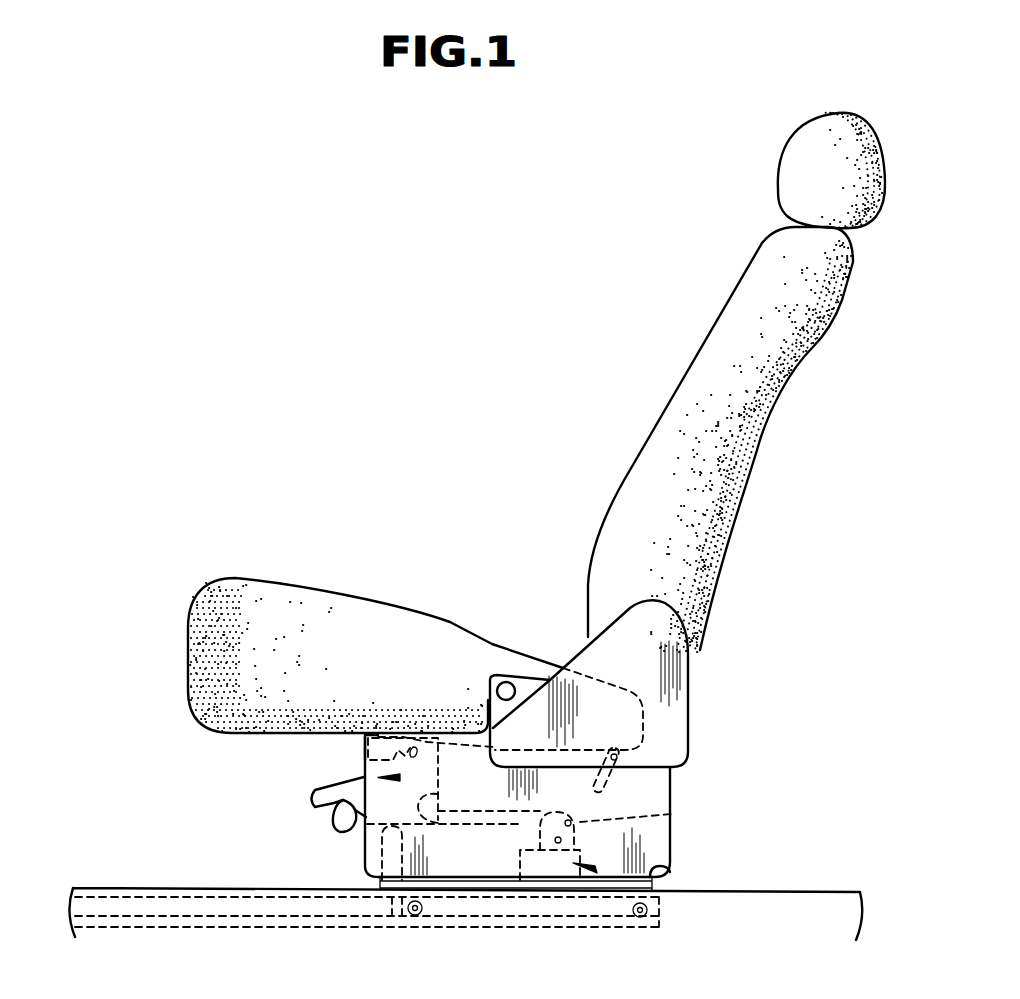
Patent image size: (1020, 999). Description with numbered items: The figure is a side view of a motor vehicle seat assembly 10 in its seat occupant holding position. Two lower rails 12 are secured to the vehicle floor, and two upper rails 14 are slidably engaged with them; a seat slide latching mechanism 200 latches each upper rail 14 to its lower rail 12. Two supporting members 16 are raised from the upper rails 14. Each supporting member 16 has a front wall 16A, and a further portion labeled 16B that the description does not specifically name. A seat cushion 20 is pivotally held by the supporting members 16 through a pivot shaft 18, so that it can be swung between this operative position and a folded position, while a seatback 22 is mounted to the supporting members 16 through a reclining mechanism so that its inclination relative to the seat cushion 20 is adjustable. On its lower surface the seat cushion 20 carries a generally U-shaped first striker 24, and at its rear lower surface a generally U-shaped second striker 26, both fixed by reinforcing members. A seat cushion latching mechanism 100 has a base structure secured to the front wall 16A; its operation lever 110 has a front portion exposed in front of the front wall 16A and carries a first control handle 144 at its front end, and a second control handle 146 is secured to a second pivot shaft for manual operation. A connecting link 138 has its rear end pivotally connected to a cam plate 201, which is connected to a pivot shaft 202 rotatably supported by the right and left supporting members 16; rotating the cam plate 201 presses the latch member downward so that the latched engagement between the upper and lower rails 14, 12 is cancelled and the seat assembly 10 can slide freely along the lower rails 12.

The seat assembly 10 is at (470, 490).
The lower rail 12 is at (122, 907).
The upper rail 14 is at (668, 870).
The supporting member 16 is at (662, 842).
The front wall 16A is at (366, 763).
The side shroud plate 16B is at (677, 775).
The pivot shaft 18 is at (507, 681).
The seat cushion 20 is at (242, 584).
The seatback 22 is at (757, 430).
The first striker 24 is at (416, 740).
The second striker 26 is at (607, 780).
The seat cushion latching mechanism 100 is at (367, 773).
The operation lever 110 is at (353, 827).
The connecting link 138 is at (432, 871).
The first control handle 144 is at (333, 825).
The second control handle 146 is at (313, 802).
The seat slide latching mechanism 200 is at (604, 853).
The cam plate 201 is at (672, 816).
The pivot shaft 202 is at (552, 852).